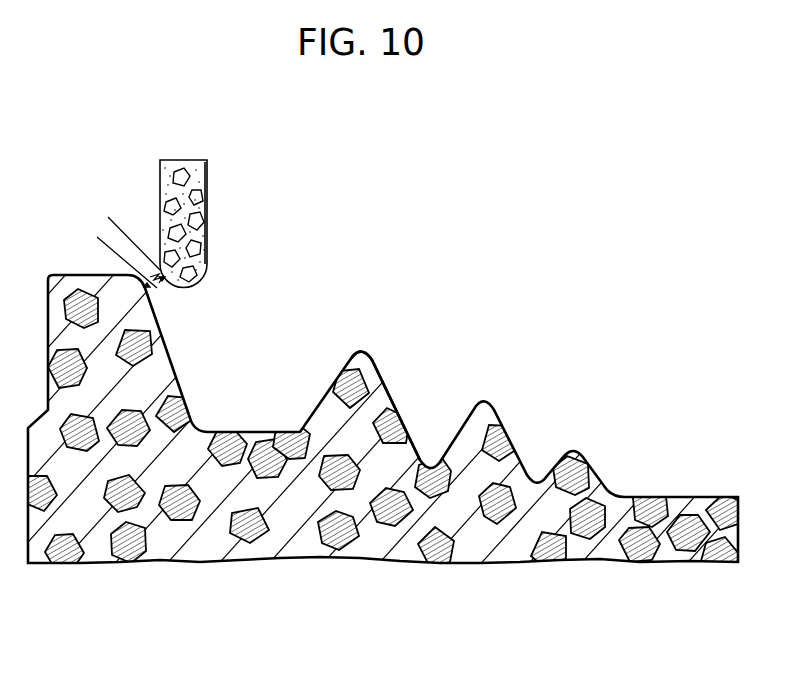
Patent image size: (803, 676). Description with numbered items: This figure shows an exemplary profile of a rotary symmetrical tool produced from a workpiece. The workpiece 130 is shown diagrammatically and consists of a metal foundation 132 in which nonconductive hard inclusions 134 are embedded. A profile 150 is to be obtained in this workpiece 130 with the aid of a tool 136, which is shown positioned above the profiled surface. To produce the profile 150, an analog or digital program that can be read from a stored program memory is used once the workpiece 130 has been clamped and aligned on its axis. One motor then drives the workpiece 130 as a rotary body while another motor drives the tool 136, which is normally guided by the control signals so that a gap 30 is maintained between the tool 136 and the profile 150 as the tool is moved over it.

The abrasive grinding wheel segment 130 is at (401, 447).
The bond matrix 132 is at (287, 510).
The abrasive grains 134 is at (326, 466).
The dressing stick 136 is at (208, 178).
The ground flank surface 150 is at (403, 397).
The gap dimension 30 is at (137, 192).